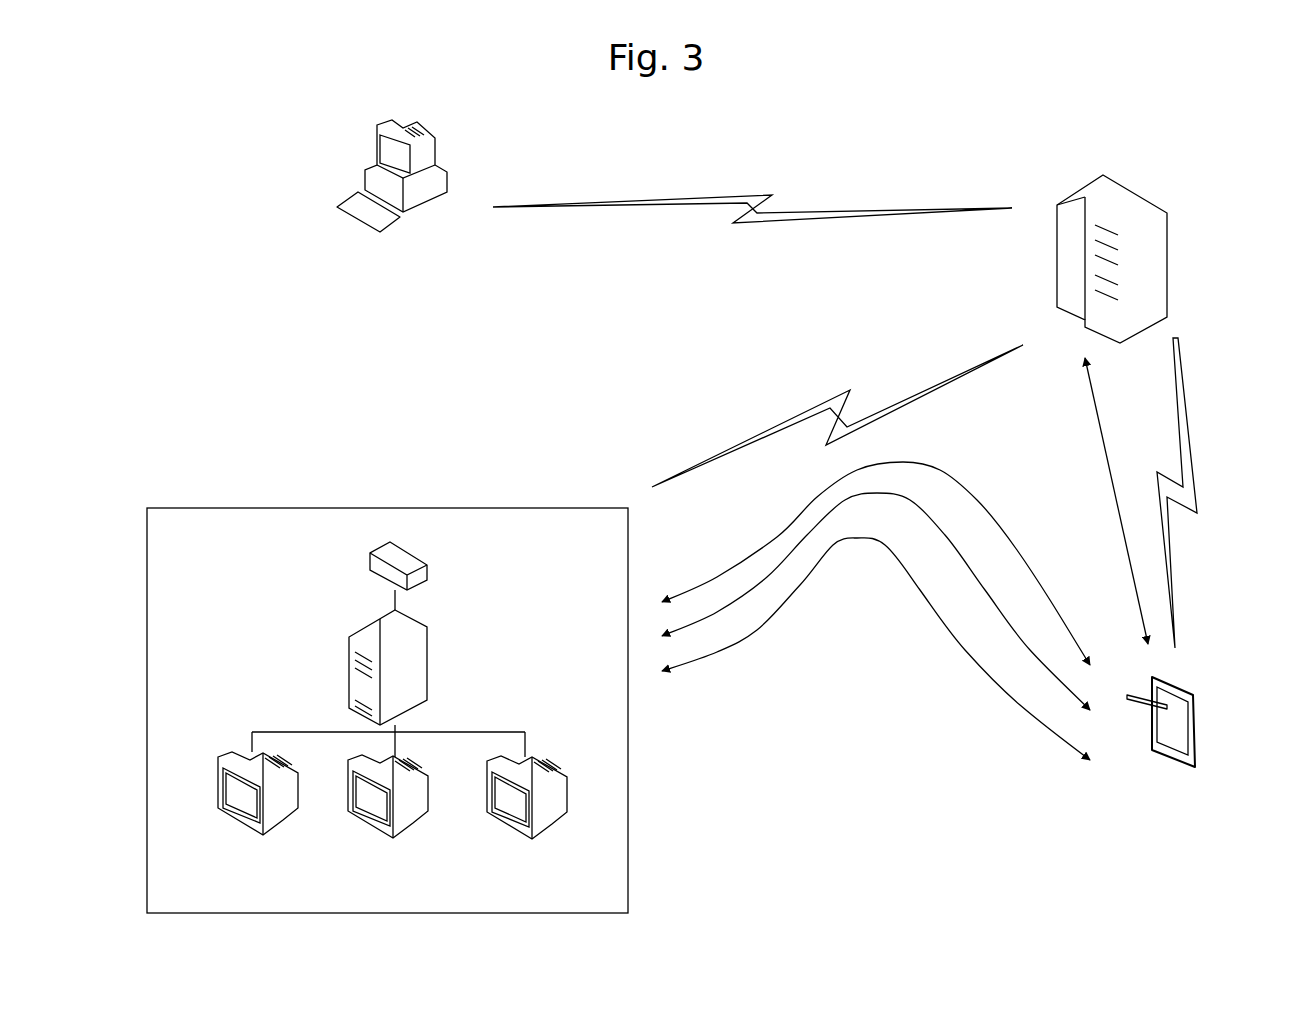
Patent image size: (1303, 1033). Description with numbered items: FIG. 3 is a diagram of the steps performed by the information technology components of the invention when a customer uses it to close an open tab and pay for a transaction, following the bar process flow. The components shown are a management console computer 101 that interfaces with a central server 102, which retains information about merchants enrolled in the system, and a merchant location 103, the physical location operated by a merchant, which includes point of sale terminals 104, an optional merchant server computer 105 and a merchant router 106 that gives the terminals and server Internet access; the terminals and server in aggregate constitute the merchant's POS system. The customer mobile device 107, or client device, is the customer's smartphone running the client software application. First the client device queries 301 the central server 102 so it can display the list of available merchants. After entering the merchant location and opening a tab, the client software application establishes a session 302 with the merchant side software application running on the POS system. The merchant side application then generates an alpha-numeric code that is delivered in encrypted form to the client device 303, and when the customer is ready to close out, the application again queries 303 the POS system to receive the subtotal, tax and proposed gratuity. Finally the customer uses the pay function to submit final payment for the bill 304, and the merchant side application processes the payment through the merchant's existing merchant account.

The management console computer 101 is at (375, 222).
The central server 102 is at (1099, 233).
The merchant location 103 is at (440, 710).
The point of sale terminals 104 is at (392, 813).
The merchant server computer 105 is at (309, 667).
The merchant router 106 is at (444, 576).
The customer mobile device 107 is at (1154, 769).
The query 301 is at (1109, 501).
The session 302 is at (876, 563).
The code delivery and query 303 is at (876, 601).
The final payment submission 304 is at (876, 649).